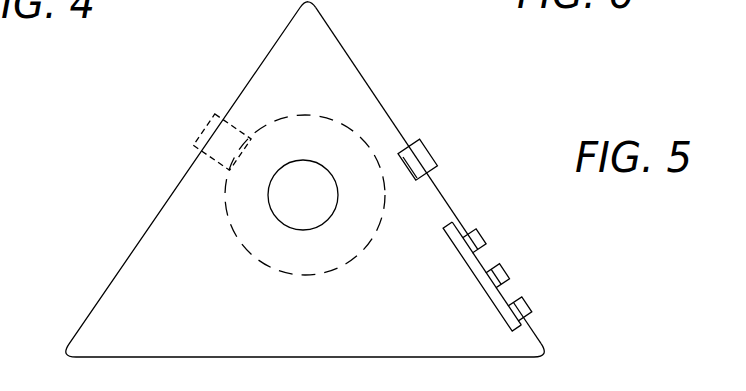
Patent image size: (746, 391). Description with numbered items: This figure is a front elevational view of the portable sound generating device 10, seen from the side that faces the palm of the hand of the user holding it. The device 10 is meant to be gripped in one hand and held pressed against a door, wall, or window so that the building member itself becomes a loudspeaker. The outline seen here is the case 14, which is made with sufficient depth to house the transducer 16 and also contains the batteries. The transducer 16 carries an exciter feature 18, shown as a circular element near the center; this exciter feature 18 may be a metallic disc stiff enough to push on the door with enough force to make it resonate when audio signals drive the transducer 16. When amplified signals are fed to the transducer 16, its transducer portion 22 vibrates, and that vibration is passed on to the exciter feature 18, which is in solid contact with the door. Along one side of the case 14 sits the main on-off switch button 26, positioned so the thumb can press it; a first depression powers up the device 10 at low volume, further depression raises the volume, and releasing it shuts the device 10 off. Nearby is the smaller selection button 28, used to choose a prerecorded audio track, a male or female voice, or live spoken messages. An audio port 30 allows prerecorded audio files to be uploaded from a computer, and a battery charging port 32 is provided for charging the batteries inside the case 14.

The portable sound generating device 10 is at (103, 283).
The case 14 is at (357, 77).
The transducer 16 is at (243, 134).
The exciter feature 18 is at (271, 211).
The transducer portion 22 is at (178, 153).
The main on-off switch button 26 is at (436, 151).
The selection button 28 is at (482, 233).
The audio port 30 is at (492, 270).
The battery charging port 32 is at (507, 304).